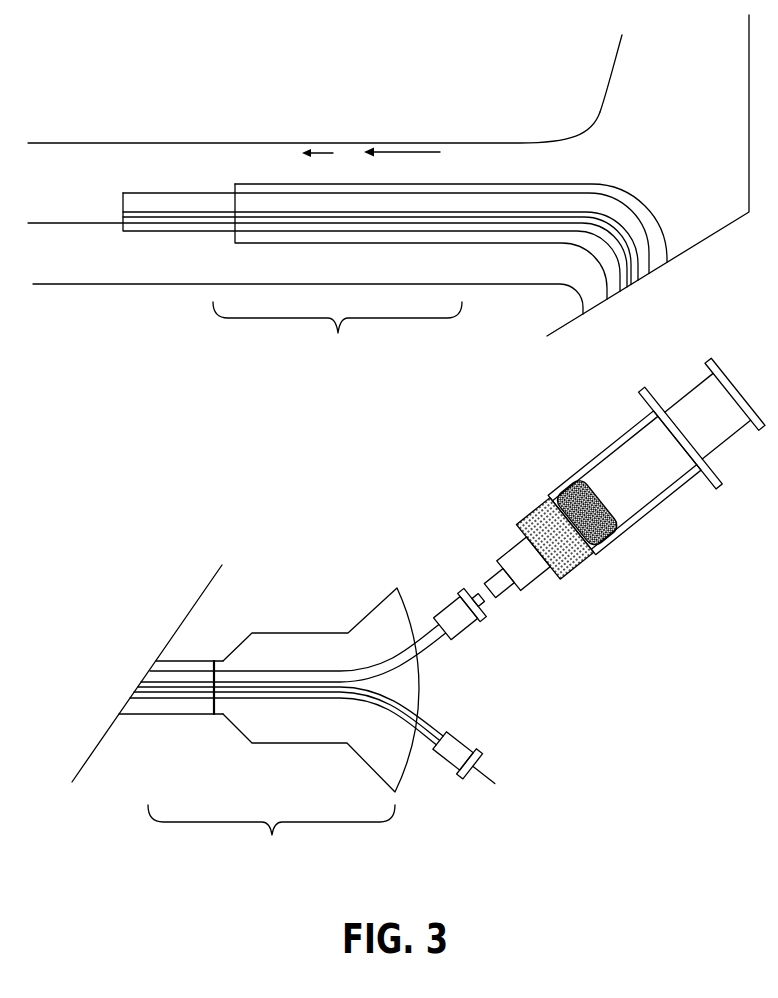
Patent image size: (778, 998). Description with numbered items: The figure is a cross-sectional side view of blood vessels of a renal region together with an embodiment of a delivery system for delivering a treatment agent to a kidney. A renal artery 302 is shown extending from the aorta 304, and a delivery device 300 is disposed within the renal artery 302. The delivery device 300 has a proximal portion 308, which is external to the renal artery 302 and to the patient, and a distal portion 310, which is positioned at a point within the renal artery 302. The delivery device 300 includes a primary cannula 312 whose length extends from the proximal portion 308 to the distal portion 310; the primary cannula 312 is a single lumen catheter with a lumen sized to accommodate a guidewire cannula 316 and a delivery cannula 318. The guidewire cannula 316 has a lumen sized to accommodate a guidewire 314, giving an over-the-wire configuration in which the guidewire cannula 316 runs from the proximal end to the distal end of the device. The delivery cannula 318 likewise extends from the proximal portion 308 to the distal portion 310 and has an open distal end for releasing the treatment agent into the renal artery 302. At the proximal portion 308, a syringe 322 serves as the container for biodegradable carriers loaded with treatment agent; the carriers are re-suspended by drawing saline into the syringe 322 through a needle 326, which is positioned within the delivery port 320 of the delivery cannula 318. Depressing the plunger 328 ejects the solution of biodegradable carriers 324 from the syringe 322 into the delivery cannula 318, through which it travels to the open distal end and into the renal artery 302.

The delivery device 300 is at (407, 160).
The renal artery 302 is at (497, 138).
The aorta 304 is at (628, 77).
The proximal portion 308 is at (245, 713).
The distal portion 310 is at (337, 330).
The primary cannula 312 is at (622, 197).
The guidewire 314 is at (60, 226).
The guidewire cannula 316 is at (163, 233).
The delivery cannula 318 is at (279, 200).
The delivery port 320 is at (453, 592).
The syringe 322 is at (663, 499).
The solution of biodegradable carriers 324 is at (579, 568).
The needle 326 is at (492, 604).
The plunger 328 is at (681, 390).